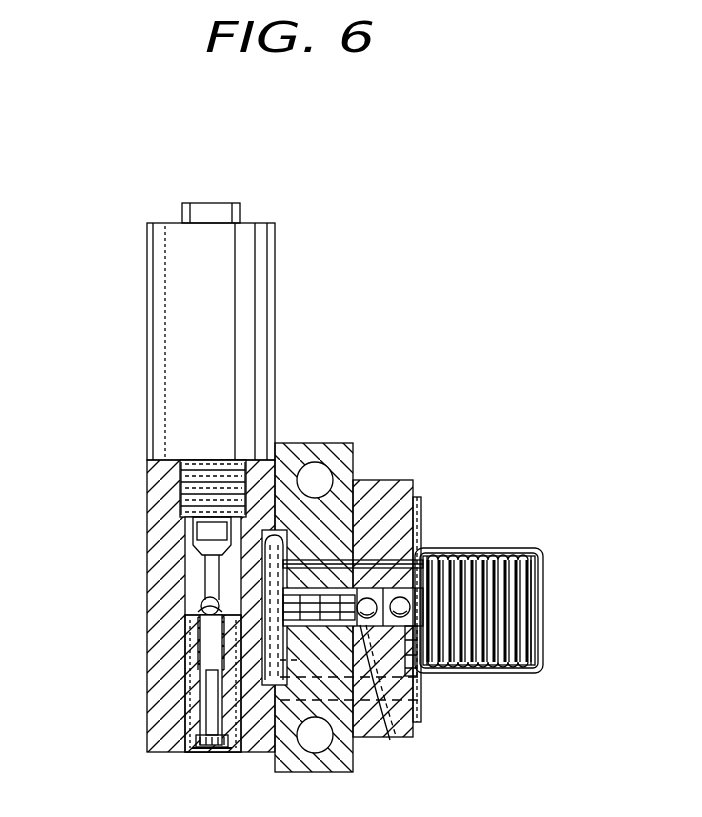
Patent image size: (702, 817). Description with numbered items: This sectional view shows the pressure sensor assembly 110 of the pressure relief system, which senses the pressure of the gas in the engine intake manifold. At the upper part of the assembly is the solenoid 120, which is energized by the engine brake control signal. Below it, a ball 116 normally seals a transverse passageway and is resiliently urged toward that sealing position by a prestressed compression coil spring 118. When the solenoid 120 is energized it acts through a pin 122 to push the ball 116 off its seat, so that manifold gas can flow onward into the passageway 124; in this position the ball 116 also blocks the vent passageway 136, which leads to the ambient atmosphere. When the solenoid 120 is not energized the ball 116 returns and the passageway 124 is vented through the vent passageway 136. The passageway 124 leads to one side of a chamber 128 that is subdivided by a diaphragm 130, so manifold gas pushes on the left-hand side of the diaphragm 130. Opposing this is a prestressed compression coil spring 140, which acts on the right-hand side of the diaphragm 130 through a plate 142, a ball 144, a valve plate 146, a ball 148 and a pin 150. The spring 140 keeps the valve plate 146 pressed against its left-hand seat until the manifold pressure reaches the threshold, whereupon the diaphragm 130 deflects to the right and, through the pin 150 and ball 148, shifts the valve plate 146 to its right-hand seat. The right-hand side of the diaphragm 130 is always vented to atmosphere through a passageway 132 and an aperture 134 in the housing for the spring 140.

The pressure sensor assembly 110 is at (418, 388).
The ball 116 is at (255, 600).
The prestressed compression coil spring 118 is at (185, 733).
The solenoid 120 is at (160, 250).
The pin 122 is at (200, 535).
The passageway 124 is at (240, 632).
The chamber 128 is at (200, 600).
The diaphragm 130 is at (205, 665).
The passageway 132 is at (345, 600).
The aperture 134 is at (541, 610).
The vent passageway 136 is at (208, 752).
The prestressed compression coil spring 140 is at (541, 583).
The plate 142 is at (465, 548).
The ball 144 is at (418, 548).
The valve plate 146 is at (415, 676).
The ball 148 is at (390, 704).
The pin 150 is at (398, 596).